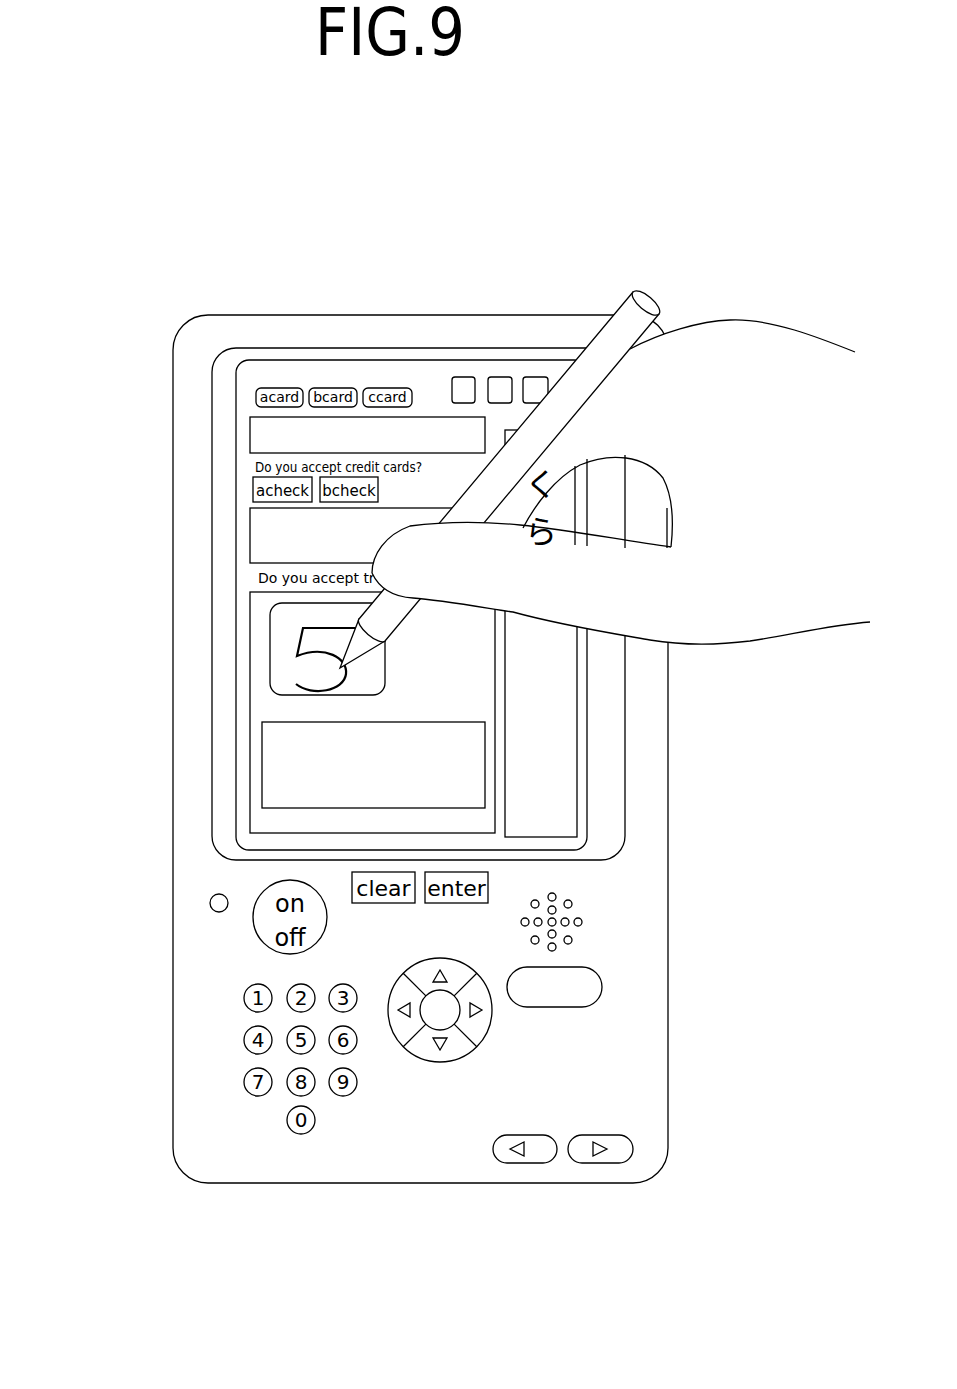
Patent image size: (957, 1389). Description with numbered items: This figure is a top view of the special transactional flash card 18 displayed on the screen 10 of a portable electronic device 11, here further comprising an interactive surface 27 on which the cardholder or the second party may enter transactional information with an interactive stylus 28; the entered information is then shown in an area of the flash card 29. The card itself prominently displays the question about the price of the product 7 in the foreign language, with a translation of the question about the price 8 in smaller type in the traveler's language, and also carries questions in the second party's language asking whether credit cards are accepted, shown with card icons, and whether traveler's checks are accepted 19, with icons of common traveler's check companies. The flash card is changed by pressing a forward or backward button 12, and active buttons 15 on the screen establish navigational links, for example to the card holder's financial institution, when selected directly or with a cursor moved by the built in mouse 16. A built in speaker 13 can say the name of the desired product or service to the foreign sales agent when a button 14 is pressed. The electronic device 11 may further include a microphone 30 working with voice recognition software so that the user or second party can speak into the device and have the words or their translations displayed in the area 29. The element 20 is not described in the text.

The question about the price of the product 7 is at (560, 667).
The translation of the question about the price 8 is at (273, 370).
The screen 10 is at (603, 747).
The portable electronic device 11 is at (436, 283).
The forward or backward button 12 is at (628, 1149).
The speaker 13 is at (580, 913).
The button 14 is at (601, 987).
The active buttons 15 is at (412, 527).
The built in mouse 16 is at (490, 1028).
The special transactional flash card 18 is at (547, 828).
The question whether traveler's checks are accepted 19 is at (262, 425).
The second translated sentence display 20 is at (258, 514).
The interactive surface 27 is at (287, 657).
The interactive stylus 28 is at (292, 612).
The area of the flash card 29 is at (285, 740).
The microphone 30 is at (210, 901).